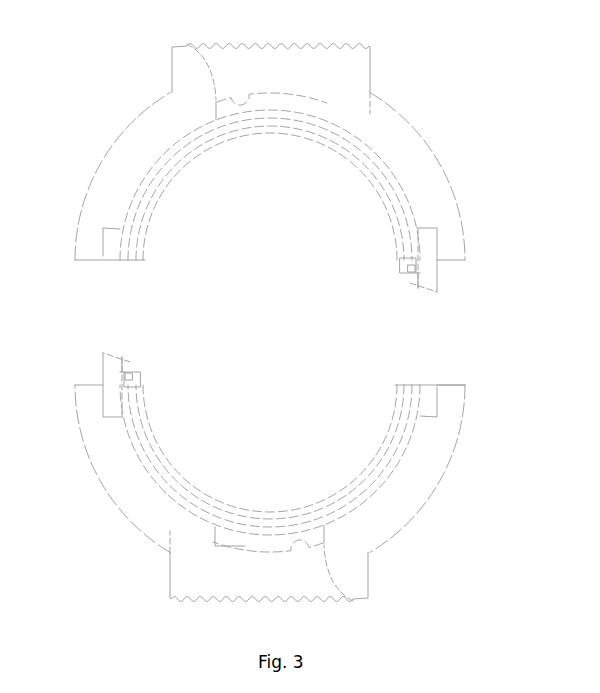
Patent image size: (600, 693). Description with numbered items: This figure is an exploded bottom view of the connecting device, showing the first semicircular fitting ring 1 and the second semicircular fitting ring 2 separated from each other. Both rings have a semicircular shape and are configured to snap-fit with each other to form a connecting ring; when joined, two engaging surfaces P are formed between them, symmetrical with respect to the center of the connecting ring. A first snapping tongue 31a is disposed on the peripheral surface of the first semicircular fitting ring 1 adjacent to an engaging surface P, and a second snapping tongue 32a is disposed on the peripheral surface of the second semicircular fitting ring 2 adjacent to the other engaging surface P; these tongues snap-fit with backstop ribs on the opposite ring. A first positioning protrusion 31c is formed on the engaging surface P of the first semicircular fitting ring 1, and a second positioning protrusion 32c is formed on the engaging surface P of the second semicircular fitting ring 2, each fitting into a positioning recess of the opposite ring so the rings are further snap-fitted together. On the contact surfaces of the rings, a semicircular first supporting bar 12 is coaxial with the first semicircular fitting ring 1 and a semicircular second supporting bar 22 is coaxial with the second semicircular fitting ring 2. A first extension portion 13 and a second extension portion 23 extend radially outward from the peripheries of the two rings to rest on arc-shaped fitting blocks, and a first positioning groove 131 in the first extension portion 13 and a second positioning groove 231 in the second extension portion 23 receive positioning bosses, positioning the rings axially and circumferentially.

The first semicircular fitting ring 1 is at (373, 92).
The second semicircular fitting ring 2 is at (380, 522).
The first supporting bar 12 is at (397, 212).
The first extension portion 13 is at (187, 44).
The first positioning groove 131 is at (242, 101).
The second supporting bar 22 is at (182, 492).
The second extension portion 23 is at (244, 542).
The second positioning groove 231 is at (297, 544).
The first snapping tongue 31a is at (418, 289).
The first positioning protrusion 31c is at (404, 268).
The second snapping tongue 32a is at (112, 352).
The second positioning protrusion 32c is at (136, 371).
The engaging surface P is at (463, 386).